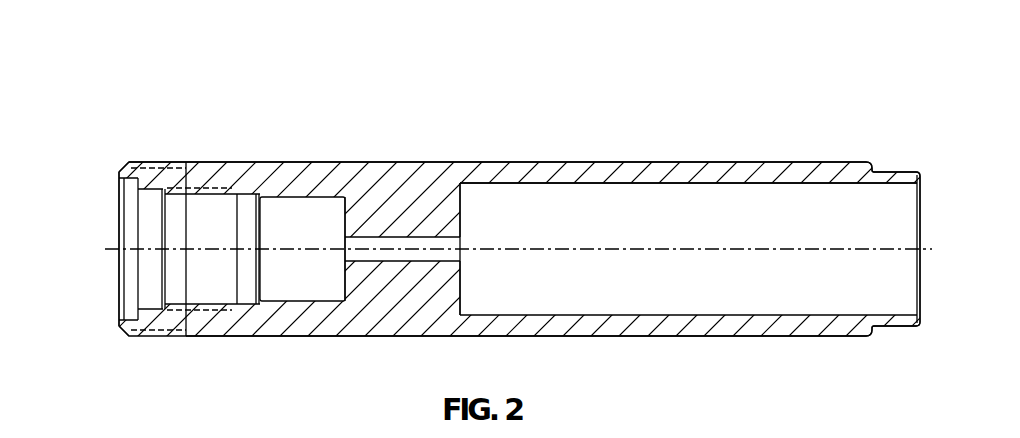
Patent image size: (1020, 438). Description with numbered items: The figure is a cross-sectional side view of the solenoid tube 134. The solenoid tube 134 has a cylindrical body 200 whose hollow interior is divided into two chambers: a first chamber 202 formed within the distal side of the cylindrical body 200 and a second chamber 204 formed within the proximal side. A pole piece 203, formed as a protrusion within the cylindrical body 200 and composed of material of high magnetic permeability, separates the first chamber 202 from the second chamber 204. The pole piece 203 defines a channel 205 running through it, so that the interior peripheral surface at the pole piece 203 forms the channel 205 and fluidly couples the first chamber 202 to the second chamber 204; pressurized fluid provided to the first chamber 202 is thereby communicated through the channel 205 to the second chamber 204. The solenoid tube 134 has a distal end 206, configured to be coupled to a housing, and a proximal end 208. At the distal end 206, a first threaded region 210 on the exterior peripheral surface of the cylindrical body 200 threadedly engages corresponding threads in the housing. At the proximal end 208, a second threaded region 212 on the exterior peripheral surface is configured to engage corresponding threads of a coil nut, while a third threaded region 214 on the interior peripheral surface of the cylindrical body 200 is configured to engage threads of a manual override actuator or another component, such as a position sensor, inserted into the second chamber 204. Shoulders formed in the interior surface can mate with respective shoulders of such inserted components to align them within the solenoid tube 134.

The solenoid tube 134 is at (125, 66).
The cylindrical body 200 is at (588, 170).
The first chamber 202 is at (652, 192).
The pole piece 203 is at (415, 198).
The second chamber 204 is at (316, 222).
The channel 205 is at (373, 240).
The distal end 206 is at (828, 160).
The proximal end 208 is at (178, 128).
The first threaded region 210 is at (907, 172).
The second threaded region 212 is at (143, 161).
The third threaded region 214 is at (237, 192).